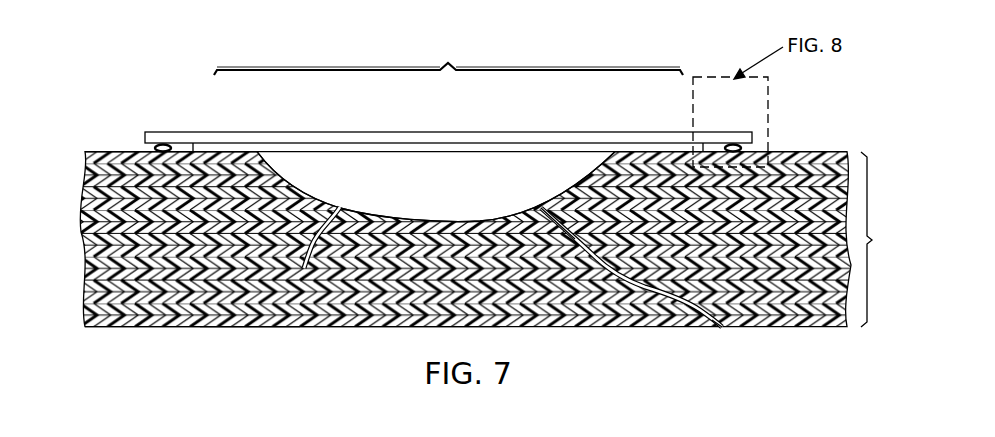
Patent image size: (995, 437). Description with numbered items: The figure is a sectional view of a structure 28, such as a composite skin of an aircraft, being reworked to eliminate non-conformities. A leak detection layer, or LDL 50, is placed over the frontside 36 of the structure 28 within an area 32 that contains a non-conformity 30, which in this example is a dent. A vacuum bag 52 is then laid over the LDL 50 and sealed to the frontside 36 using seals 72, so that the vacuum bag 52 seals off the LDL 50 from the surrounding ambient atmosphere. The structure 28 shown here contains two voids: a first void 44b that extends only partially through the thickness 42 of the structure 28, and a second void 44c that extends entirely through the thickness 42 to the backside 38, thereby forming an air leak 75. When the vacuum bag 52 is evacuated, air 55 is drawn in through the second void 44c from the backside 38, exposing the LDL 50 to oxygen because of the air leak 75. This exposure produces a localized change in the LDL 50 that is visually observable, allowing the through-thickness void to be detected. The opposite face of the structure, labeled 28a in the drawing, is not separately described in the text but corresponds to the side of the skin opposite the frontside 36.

The structure 28 is at (73, 197).
The second surface of composite structure 28a is at (85, 302).
The non-conformity 30 is at (459, 176).
The area 32 is at (448, 55).
The frontside 36 is at (108, 152).
The backside 38 is at (250, 328).
The thickness 42 is at (883, 239).
The first void 44b is at (341, 206).
The second void 44c is at (677, 296).
The LDL 50 is at (432, 150).
The vacuum bag 52 is at (572, 141).
The air 55 is at (727, 330).
The seals 72 is at (161, 144).
The air leak 75 is at (541, 209).